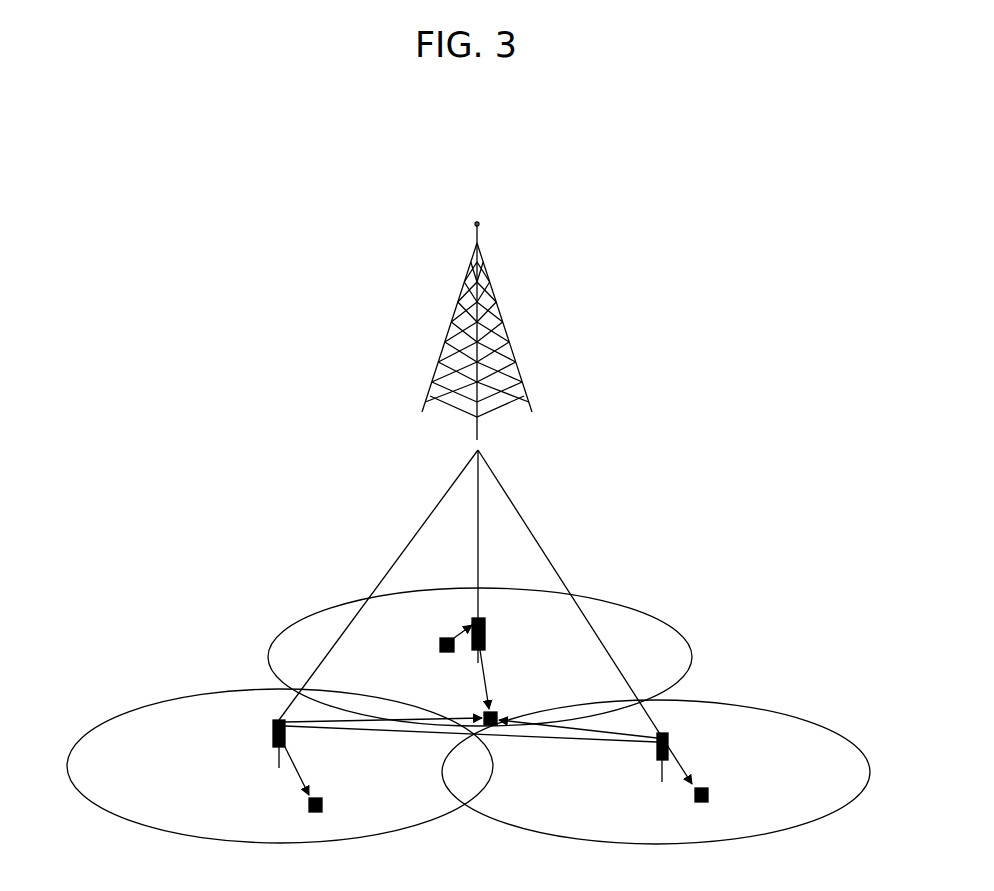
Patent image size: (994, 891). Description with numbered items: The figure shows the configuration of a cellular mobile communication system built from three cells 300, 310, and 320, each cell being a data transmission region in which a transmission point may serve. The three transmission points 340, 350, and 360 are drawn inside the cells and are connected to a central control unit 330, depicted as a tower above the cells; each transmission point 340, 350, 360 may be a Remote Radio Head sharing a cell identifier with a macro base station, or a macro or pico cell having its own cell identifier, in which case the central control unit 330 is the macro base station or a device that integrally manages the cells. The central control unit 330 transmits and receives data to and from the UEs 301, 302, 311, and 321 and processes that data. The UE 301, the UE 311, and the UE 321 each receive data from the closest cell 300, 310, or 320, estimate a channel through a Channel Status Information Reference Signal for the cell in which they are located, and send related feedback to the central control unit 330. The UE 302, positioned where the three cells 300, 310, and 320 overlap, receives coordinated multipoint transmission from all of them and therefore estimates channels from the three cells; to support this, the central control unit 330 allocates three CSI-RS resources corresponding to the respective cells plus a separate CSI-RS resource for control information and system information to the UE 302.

The cell 300 is at (481, 587).
The UE 301 is at (440, 639).
The UE 302 is at (497, 711).
The cell 310 is at (223, 692).
The UE 311 is at (322, 799).
The cell 320 is at (758, 707).
The UE 321 is at (708, 789).
The central control unit 330 is at (490, 271).
The transmission point 340 is at (486, 621).
The transmission point 350 is at (272, 729).
The transmission point 360 is at (656, 748).